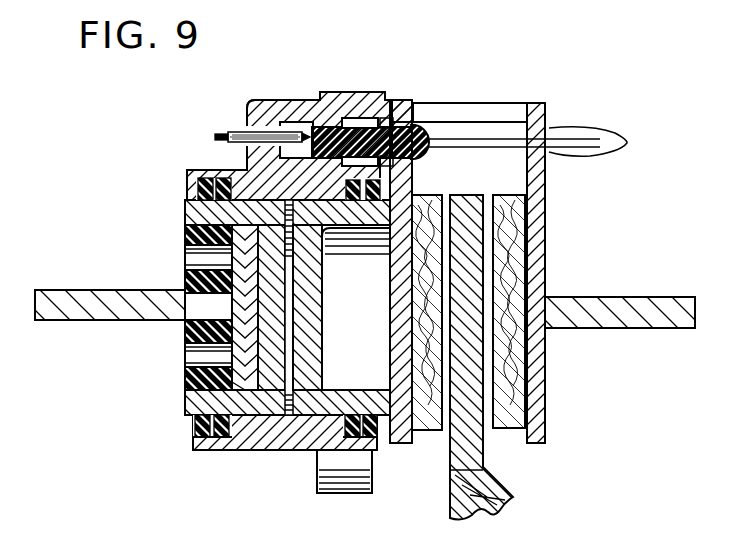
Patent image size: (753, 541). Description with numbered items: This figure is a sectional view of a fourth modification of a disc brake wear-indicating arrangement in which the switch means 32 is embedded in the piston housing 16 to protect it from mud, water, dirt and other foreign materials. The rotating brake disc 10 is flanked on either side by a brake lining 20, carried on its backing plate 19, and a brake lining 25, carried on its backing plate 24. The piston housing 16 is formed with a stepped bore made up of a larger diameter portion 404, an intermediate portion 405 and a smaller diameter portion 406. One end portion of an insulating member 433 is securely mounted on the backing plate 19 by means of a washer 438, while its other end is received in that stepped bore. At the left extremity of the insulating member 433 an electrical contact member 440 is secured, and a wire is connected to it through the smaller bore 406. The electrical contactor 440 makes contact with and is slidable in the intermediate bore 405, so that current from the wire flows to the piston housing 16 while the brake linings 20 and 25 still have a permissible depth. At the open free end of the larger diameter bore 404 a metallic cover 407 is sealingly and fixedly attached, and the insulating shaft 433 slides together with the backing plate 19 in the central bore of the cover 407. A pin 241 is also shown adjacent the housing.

The disc 10 is at (474, 198).
The piston housing 16 is at (236, 176).
The backing plate 19 is at (394, 443).
The brake lining 20 is at (424, 425).
The backing plate 24 is at (539, 405).
The brake lining 25 is at (506, 423).
The switch means 32 is at (431, 153).
The pin 241 is at (240, 172).
The larger diameter portion 404 is at (358, 118).
The intermediate portion 405 is at (299, 122).
The smaller diameter portion 406 is at (258, 124).
The metallic cover 407 is at (402, 112).
The insulating member 433 is at (364, 118).
The washer 438 is at (416, 125).
The electrical contact member 440 is at (319, 128).